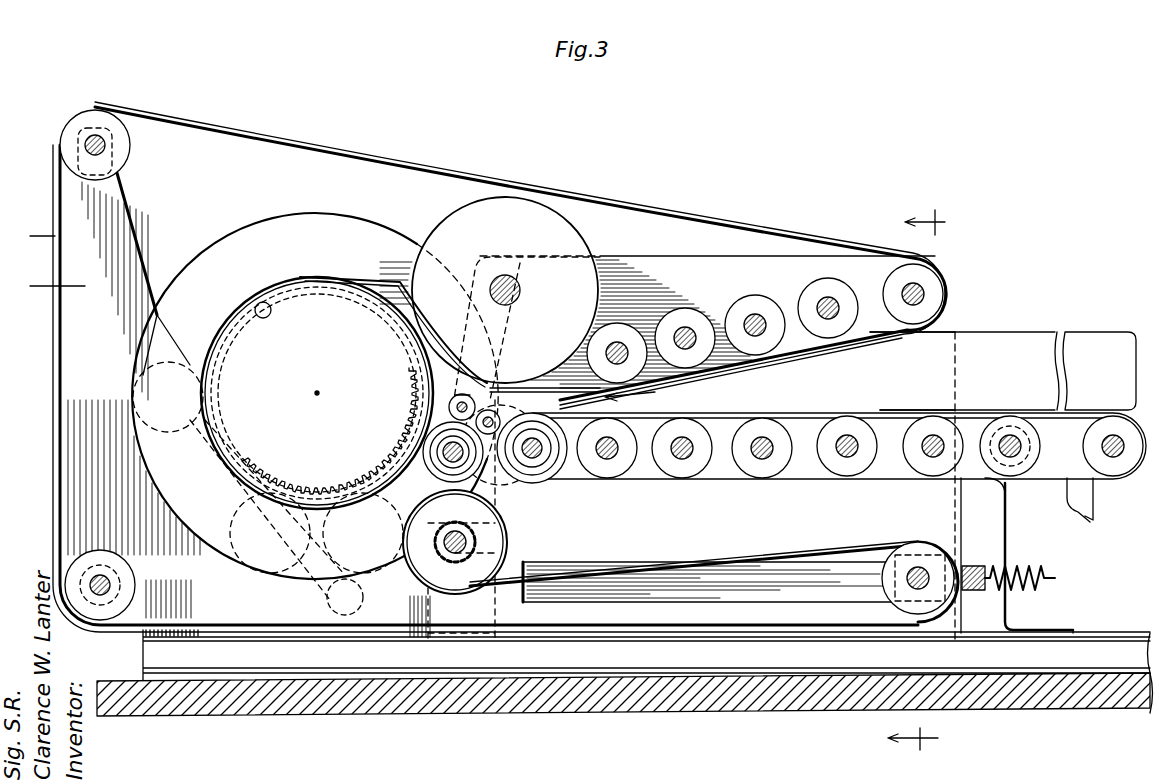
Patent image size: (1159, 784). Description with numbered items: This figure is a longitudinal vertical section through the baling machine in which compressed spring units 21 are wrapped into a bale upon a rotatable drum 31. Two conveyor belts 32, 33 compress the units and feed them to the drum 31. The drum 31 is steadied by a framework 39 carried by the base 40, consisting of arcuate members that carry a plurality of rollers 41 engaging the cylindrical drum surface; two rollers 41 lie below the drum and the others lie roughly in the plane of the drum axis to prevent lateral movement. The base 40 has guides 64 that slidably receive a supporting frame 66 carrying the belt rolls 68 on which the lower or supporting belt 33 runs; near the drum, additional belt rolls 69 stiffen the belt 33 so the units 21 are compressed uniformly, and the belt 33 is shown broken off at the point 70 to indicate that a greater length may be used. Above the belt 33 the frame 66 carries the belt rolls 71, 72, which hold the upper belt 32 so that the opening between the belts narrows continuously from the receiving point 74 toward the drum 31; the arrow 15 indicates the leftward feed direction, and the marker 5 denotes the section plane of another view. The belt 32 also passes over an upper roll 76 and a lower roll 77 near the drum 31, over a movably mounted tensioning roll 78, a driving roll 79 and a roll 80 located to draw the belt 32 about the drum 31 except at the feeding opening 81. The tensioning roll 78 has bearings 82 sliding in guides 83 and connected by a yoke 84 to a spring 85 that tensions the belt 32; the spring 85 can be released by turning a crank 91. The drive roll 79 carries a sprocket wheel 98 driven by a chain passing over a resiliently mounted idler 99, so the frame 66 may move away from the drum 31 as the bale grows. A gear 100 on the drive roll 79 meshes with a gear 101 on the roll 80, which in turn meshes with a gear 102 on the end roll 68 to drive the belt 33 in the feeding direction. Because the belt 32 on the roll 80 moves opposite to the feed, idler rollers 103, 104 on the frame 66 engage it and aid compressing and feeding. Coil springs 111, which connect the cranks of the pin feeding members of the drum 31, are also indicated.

The section line 5- 5 is at (921, 482).
The direction arrow of conveyor travel 15 is at (646, 397).
The spring unit 21 is at (392, 300).
The drum 31 is at (250, 322).
The conveyor belt 32 is at (305, 148).
The supporting conveyor belt 33 is at (740, 412).
The framework 39 is at (43, 287).
The base 40 is at (215, 705).
The roller 41 is at (505, 372).
The guide 64 is at (270, 690).
The supporting frame 66 is at (710, 262).
The conveyor belt supporting roll 68 is at (607, 478).
The additional conveyor belt roll 69 is at (845, 455).
The break point of conveyor 70 is at (1050, 412).
The conveyor belt roll 71 is at (938, 285).
The conveyor belt roll 72 is at (535, 215).
The receiving opening point 74 is at (943, 372).
The upper conveyor belt roll 76 is at (85, 130).
The lower conveyor belt roll 77 is at (128, 578).
The tensioning roll 78 is at (918, 548).
The driving roll 79 is at (480, 565).
The roll 80 is at (415, 475).
The feeding opening 81 is at (455, 400).
The bearing 82 is at (893, 580).
The guide 83 is at (660, 565).
The yoke 84 is at (985, 568).
The spring 85 is at (1055, 578).
The crank 91 is at (300, 500).
The sprocket wheel 98 is at (490, 500).
The idler 99 is at (345, 598).
The gear 100 is at (410, 560).
The gear 101 is at (462, 482).
The gear 102 is at (540, 485).
The idler roller 103 is at (445, 420).
The idler roller 104 is at (510, 400).
The coil spring 111 is at (238, 245).